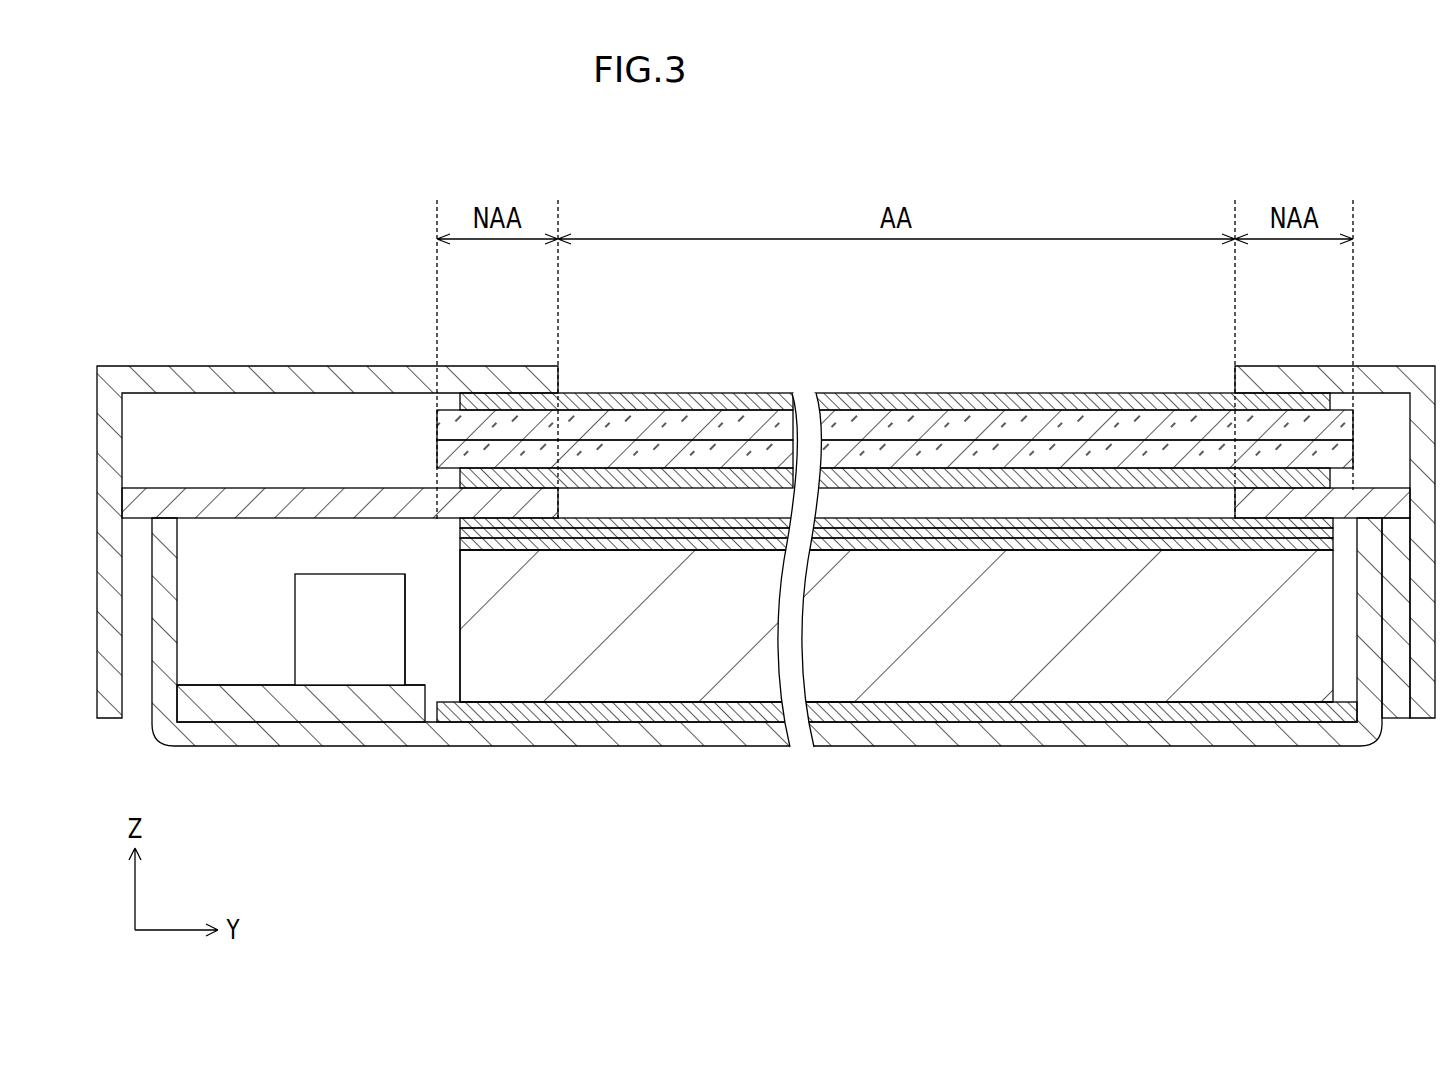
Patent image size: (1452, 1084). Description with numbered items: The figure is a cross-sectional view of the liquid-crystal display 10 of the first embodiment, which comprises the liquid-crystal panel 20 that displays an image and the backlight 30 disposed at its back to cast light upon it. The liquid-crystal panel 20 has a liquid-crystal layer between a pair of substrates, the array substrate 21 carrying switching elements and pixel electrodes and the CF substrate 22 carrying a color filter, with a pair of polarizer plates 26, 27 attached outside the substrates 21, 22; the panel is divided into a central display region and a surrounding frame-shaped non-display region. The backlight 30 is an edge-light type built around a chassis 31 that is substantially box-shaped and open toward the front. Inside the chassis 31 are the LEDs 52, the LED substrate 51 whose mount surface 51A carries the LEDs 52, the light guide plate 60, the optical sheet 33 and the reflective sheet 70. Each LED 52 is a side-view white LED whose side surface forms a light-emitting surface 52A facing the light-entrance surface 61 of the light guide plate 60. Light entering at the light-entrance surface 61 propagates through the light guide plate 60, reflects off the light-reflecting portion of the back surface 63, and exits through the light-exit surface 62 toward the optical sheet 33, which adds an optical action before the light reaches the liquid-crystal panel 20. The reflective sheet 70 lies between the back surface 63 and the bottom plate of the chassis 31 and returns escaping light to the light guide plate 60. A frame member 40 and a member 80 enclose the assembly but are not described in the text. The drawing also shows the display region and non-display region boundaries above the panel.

The liquid-crystal display 10 is at (784, 134).
The liquid-crystal panel 20 is at (895, 382).
The array substrate 21 is at (1042, 430).
The CF substrate 22 is at (1005, 452).
The polarizer plate 26 is at (1093, 402).
The polarizer plate 27 is at (1115, 330).
The backlight 30 is at (781, 586).
The chassis 31 is at (480, 735).
The optical sheet 33 is at (708, 525).
The bezel 40 is at (269, 384).
The LED substrate 51 is at (301, 749).
The mount surface 51A is at (237, 680).
The LED 52 is at (361, 557).
The light-emitting surface 52A is at (413, 575).
The light guide plate 60 is at (861, 557).
The light-entrance surface 61 is at (458, 563).
The light-exit surface 62 is at (1005, 551).
The back surface 63 is at (940, 702).
The reflective sheet 70 is at (560, 721).
The frame 80 is at (198, 507).